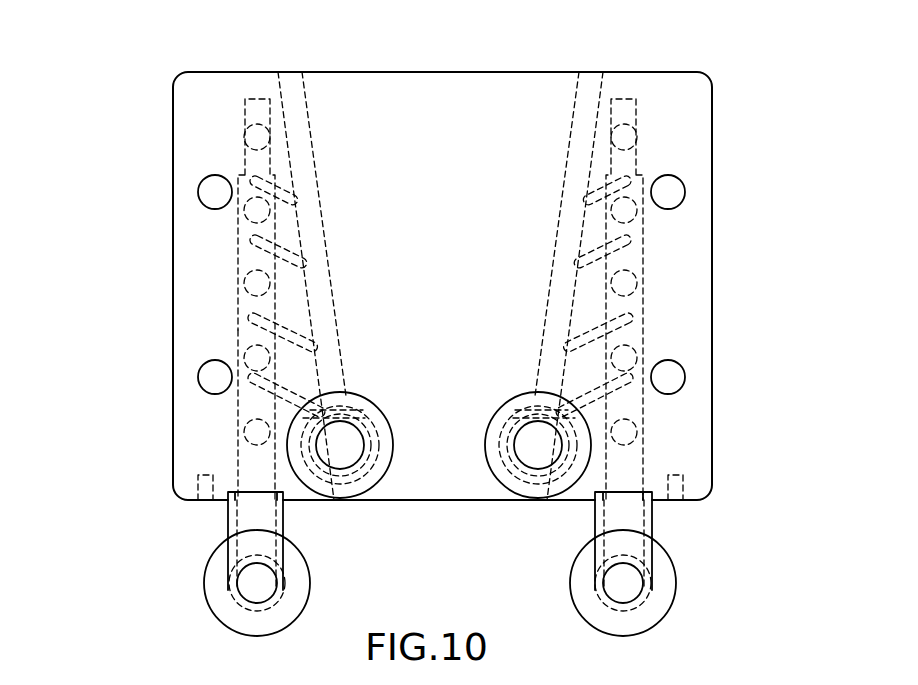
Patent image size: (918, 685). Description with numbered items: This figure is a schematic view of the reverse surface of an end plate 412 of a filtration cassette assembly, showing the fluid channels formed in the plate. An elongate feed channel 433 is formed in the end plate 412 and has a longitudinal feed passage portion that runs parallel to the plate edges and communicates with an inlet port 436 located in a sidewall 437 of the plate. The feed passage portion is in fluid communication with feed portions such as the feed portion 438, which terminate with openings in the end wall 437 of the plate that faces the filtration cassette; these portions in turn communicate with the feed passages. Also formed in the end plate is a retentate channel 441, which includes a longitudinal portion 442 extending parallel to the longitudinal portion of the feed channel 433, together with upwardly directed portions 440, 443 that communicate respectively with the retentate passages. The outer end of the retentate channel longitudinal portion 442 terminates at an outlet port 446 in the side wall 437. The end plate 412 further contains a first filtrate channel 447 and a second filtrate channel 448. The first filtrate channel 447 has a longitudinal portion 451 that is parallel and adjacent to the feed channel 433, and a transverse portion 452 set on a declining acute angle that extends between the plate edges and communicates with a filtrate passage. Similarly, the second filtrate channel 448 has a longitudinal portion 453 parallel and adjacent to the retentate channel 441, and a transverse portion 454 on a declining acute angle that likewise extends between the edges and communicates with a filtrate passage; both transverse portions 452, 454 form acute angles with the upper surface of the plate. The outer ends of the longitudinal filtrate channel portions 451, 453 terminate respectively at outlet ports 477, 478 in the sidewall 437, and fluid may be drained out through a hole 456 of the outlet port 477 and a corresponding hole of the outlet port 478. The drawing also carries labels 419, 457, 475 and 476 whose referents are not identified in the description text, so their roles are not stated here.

The end plate 412 is at (433, 55).
The mounting plate 419 is at (511, 240).
The elongate feed channel 433 is at (643, 410).
The inlet port 436 is at (605, 493).
The sidewall 437 is at (652, 510).
The feed portion 438 is at (633, 432).
The upwardly directed portion of retentate channel 440 is at (243, 283).
The retentate channel 441 is at (240, 328).
The longitudinal portion of retentate channel 442 is at (240, 412).
The upwardly directed portion of retentate channel 443 is at (243, 137).
The outlet port 446 is at (258, 494).
The first filtrate channel 447 is at (570, 117).
The second filtrate channel 448 is at (312, 127).
The longitudinal portion of first filtrate channel 451 is at (565, 175).
The transverse portion of first filtrate channel 452 is at (628, 320).
The longitudinal portion of second filtrate channel 453 is at (345, 315).
The transverse portion of second filtrate channel 454 is at (295, 248).
The hole 456 is at (341, 445).
The right bushing 457 is at (537, 445).
The right lug 475 is at (677, 583).
The left lug 476 is at (204, 583).
The outlet port 477 is at (388, 483).
The outlet port 478 is at (490, 483).